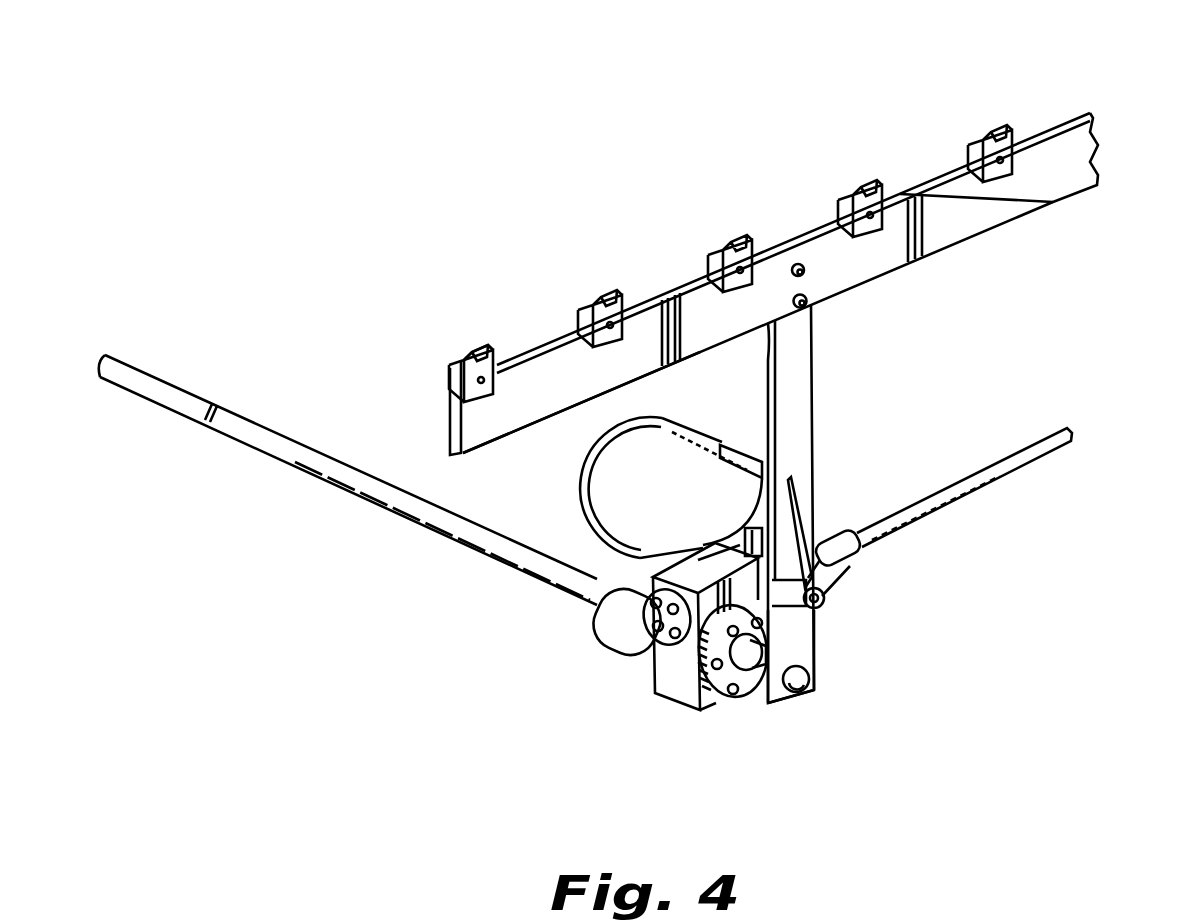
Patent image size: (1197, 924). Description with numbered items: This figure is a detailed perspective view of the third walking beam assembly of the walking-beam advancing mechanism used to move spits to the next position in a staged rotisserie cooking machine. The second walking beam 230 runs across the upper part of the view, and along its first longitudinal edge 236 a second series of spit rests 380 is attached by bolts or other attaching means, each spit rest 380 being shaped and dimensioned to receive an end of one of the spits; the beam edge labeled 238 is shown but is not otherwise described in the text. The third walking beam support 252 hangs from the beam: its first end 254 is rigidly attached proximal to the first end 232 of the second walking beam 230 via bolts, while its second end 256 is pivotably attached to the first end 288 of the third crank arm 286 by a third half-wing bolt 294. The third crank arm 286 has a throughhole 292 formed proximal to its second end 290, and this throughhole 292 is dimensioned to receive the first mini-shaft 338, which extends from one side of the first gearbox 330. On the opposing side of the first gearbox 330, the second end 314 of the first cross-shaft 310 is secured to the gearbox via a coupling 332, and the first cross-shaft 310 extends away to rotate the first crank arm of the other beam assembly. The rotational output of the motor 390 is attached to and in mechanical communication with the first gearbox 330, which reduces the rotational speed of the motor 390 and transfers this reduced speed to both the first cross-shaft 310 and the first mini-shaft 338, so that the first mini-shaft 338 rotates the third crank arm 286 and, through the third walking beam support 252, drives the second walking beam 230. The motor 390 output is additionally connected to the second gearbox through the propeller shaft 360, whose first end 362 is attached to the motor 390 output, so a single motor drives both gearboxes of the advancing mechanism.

The second walking beam 230 is at (945, 207).
The first end of the second walking beam 232 is at (482, 445).
The first longitudinal edge of the second walking beam 236 is at (533, 347).
The beam upper edge 238 is at (1005, 225).
The third walking beam support 252 is at (805, 395).
The first end of the third walking beam support 254 is at (807, 304).
The second end of the third walking beam support 256 is at (805, 525).
The third crank arm 286 is at (798, 637).
The first end of the third crank arm 288 is at (703, 543).
The second end of the third crank arm 290 is at (810, 668).
The throughhole 292 is at (790, 692).
The third half-wing bolt 294 is at (824, 595).
The first cross-shaft 310 is at (500, 565).
The second end of the first cross-shaft 314 is at (594, 610).
The first gearbox 330 is at (678, 705).
The coupling 332 is at (622, 618).
The first mini-shaft 338 is at (748, 685).
The propeller shaft 360 is at (995, 477).
The first end of the propeller shaft 362 is at (860, 528).
The second series of spit rests 380 is at (470, 357).
The motor 390 is at (687, 463).